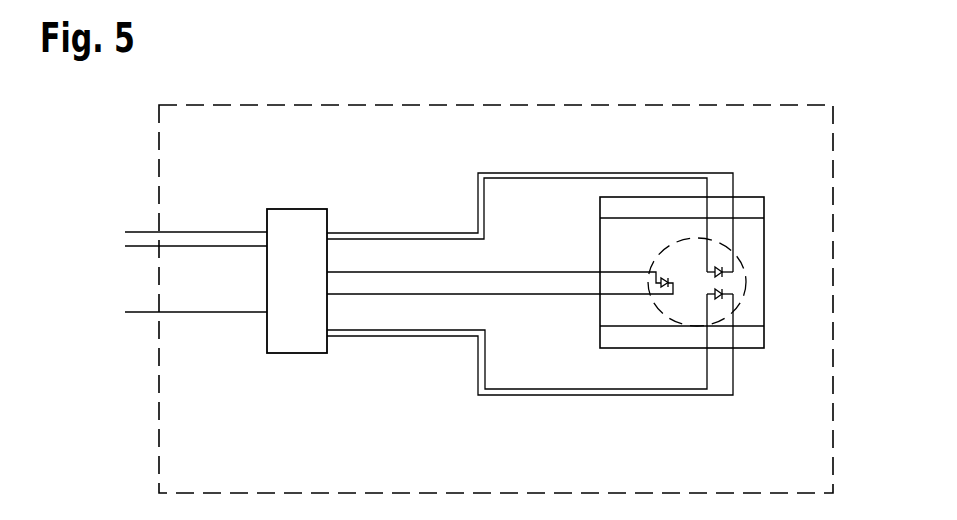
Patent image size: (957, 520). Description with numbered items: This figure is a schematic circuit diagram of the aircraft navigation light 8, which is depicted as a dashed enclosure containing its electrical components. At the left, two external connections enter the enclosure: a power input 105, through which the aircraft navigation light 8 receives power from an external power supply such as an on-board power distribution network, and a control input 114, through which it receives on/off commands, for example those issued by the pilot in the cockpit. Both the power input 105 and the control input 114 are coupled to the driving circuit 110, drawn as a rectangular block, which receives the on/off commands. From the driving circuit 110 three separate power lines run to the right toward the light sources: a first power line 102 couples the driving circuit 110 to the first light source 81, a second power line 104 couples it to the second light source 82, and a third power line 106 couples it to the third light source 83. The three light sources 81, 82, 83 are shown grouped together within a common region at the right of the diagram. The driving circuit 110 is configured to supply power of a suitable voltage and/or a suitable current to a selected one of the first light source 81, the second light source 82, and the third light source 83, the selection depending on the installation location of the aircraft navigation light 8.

The aircraft navigation light 8 is at (822, 75).
The power input 105 is at (130, 216).
The control input 114 is at (118, 328).
The driving circuit 110 is at (298, 353).
The third power line 106 is at (418, 308).
The second power line 104 is at (585, 156).
The first power line 102 is at (553, 408).
The third light source 83 is at (670, 288).
The second light source 82 is at (724, 268).
The first light source 81 is at (724, 297).